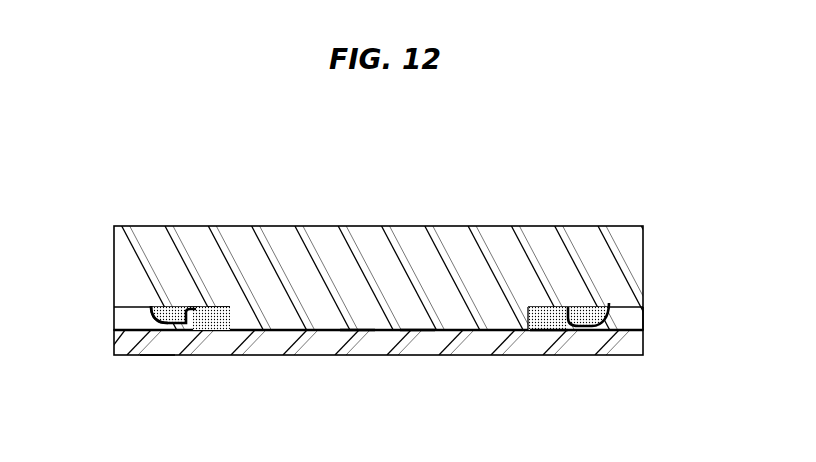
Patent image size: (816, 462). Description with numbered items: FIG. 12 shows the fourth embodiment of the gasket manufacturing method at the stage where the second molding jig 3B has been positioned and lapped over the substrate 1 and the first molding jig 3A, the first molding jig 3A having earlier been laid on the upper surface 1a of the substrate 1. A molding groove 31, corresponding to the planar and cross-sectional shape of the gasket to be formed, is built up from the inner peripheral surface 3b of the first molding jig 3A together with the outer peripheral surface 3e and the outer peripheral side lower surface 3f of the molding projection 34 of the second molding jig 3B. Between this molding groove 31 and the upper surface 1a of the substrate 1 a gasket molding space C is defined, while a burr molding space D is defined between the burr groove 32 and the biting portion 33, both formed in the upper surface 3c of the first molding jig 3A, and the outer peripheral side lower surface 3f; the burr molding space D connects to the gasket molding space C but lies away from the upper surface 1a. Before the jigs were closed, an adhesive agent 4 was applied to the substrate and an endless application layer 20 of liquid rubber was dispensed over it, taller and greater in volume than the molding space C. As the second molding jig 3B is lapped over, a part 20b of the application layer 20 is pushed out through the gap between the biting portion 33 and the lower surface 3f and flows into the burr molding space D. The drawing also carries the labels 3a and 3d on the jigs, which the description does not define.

The substrate 1 is at (473, 355).
The upper surface of the substrate 1a is at (253, 329).
The first molding jig 3A is at (645, 318).
The second molding jig 3B is at (413, 232).
The bottom surface 3a is at (156, 331).
The inner peripheral surface of the first molding jig 3b is at (195, 305).
The upper surface of the first molding jig 3c is at (151, 313).
The lower surface of second member 3d is at (418, 331).
The outer peripheral surface of the molding projection 3e is at (229, 305).
The outer peripheral side lower surface of the molding projection 3f is at (215, 305).
The adhesive agent 4 is at (550, 332).
The application layer 20 is at (545, 304).
The part of the application layer 20b is at (586, 306).
The molding groove 31 is at (168, 187).
The burr groove 32 is at (160, 309).
The biting portion 33 is at (188, 304).
The molding projection 34 is at (358, 332).
The gasket molding space C is at (520, 311).
The burr molding space D is at (611, 299).